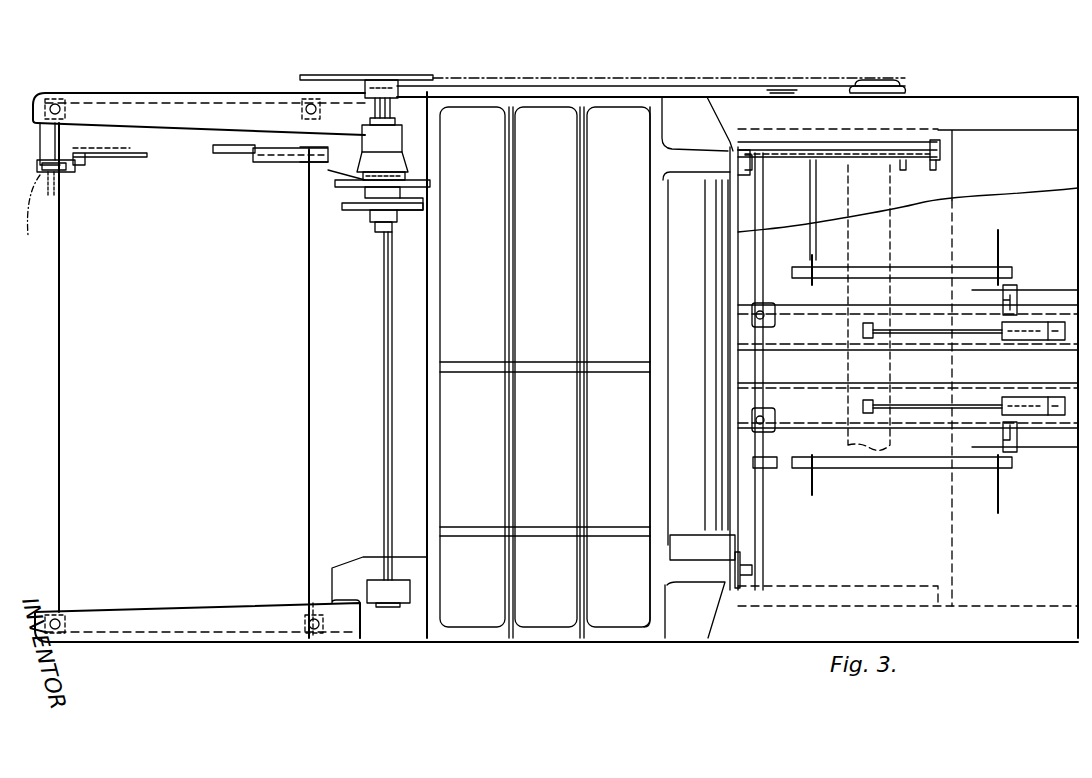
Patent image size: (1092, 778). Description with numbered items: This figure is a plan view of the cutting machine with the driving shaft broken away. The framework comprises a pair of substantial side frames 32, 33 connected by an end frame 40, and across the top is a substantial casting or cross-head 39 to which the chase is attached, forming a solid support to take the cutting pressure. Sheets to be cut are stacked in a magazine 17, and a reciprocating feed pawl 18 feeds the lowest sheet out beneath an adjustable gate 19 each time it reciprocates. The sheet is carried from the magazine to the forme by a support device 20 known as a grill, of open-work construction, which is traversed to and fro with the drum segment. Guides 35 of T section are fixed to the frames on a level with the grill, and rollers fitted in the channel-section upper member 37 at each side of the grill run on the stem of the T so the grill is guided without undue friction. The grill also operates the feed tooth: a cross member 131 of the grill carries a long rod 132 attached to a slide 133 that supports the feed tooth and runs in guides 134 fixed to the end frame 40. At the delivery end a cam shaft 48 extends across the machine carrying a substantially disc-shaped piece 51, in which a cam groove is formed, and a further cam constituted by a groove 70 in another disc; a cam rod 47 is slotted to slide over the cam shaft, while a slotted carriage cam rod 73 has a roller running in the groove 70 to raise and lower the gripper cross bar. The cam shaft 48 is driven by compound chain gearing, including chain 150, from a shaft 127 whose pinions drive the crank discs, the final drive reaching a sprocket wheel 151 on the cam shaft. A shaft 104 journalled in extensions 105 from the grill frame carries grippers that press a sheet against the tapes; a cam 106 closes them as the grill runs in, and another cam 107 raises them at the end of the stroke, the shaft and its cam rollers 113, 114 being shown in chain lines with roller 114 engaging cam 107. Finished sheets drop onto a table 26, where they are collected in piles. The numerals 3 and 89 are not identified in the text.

The drive column 3 is at (730, 497).
The magazine 17 is at (940, 290).
The feed pawl 18 is at (1005, 395).
The adjustable gate 19 is at (775, 315).
The support device 20 is at (135, 157).
The table 26 is at (312, 378).
The side frame 32 is at (975, 96).
The side frame 33 is at (938, 640).
The guides 35 is at (228, 144).
The upper member 37 is at (940, 150).
The cross-head 39 is at (545, 372).
The end frame 40 is at (1050, 148).
The cam rod 47 is at (342, 205).
The cam shaft 48 is at (384, 290).
The disc shaped piece 51 is at (335, 183).
The cam groove 70 is at (415, 210).
The carriage cam rod 73 is at (372, 215).
The bracket 89 is at (265, 160).
The shaft 104 is at (55, 176).
The extensions 105 is at (100, 160).
The cam 106 is at (400, 175).
The cam 107 is at (50, 200).
The roller 113 is at (68, 168).
The roller 114 is at (39, 211).
The shaft 127 is at (905, 92).
The cross member 131 is at (880, 365).
The long rod 132 is at (965, 335).
The slide 133 is at (1012, 315).
The guides 134 is at (835, 315).
The chain 150 is at (572, 85).
The sprocket wheel 151 is at (320, 78).